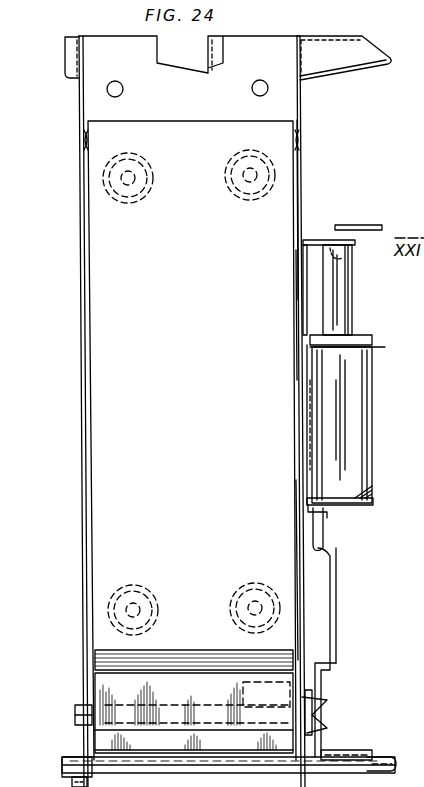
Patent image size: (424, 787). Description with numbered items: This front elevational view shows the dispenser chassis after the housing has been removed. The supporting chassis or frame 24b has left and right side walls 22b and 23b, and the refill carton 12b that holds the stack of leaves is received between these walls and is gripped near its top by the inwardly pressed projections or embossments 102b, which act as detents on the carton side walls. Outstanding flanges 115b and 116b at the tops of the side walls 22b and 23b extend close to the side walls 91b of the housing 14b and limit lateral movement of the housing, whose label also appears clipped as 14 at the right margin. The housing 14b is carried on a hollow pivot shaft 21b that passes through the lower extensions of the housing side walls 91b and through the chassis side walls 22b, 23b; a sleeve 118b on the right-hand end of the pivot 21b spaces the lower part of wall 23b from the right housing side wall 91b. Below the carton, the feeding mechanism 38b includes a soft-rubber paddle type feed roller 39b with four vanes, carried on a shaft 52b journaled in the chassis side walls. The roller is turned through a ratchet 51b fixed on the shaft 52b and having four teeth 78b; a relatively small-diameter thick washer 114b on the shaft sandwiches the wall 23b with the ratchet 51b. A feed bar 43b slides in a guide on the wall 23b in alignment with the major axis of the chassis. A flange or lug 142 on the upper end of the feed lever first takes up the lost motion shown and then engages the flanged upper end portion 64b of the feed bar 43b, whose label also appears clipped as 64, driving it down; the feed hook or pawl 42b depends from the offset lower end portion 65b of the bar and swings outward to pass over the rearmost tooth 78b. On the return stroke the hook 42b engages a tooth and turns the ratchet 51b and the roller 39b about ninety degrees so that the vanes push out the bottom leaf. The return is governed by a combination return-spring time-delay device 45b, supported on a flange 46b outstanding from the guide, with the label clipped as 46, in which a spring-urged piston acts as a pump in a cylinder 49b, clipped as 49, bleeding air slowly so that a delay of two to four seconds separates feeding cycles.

The refill carton 12b is at (227, 120).
The side wall 22b is at (82, 385).
The side wall 23b is at (302, 176).
The supporting chassis 24b is at (246, 36).
The outstanding flange 115b is at (68, 52).
The outstanding flange 116b is at (362, 52).
The projections 102b is at (84, 140).
The flange 142 is at (360, 224).
The flanged upper end portion 64b is at (303, 257).
The feeding mechanism 38b is at (298, 312).
The return-spring time-delay device 45b is at (373, 390).
The cylinder 49b is at (365, 425).
The flange 46b is at (373, 498).
The lower end portion 65b is at (310, 516).
The feed bar 43b is at (325, 520).
The side walls 91b is at (300, 560).
The feed hook 42b is at (332, 565).
The cylinder 64 is at (412, 534).
The housing 14b is at (423, 602).
The channel member 14 is at (415, 646).
The feed roller 39b is at (205, 688).
The washer 114b is at (302, 697).
The ratchet teeth 78b is at (320, 712).
The piston rod 49 is at (413, 711).
The ratchet 51b is at (325, 745).
The housing end 46 is at (416, 751).
The pivot shaft 21b is at (243, 770).
The sleeve 118b is at (372, 775).
The shaft 52b is at (75, 716).